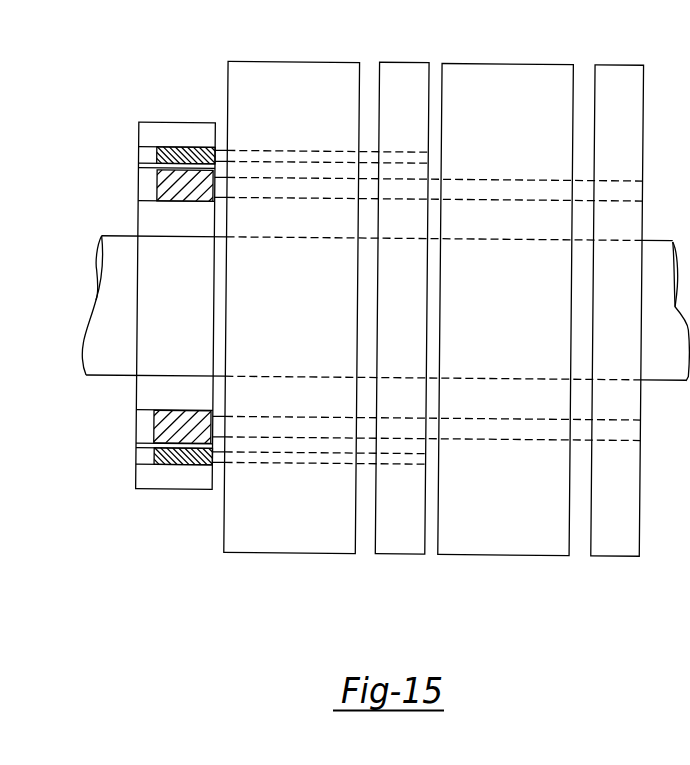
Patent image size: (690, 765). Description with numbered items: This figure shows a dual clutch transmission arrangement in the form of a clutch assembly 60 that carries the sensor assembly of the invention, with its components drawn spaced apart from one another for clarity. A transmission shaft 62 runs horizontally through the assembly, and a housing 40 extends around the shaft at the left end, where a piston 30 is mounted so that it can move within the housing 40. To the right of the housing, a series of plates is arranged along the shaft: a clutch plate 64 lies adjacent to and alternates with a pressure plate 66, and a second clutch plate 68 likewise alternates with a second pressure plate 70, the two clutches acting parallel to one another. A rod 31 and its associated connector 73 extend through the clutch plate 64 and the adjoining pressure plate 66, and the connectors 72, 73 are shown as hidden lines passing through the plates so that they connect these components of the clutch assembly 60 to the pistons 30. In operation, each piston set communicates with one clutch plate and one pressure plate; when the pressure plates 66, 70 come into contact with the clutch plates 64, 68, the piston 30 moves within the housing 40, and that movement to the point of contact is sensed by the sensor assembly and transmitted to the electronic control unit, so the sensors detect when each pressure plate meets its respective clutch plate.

The piston 30 is at (166, 184).
The rod 31 is at (156, 157).
The housing 40 is at (184, 476).
The clutch assembly 60 is at (110, 492).
The transmission shaft 62 is at (108, 325).
The clutch plate 64 is at (272, 544).
The pressure plate 66 is at (404, 542).
The clutch plate 68 is at (509, 545).
The pressure plate 70 is at (617, 543).
The connector 72 is at (289, 186).
The connector 73 is at (319, 157).